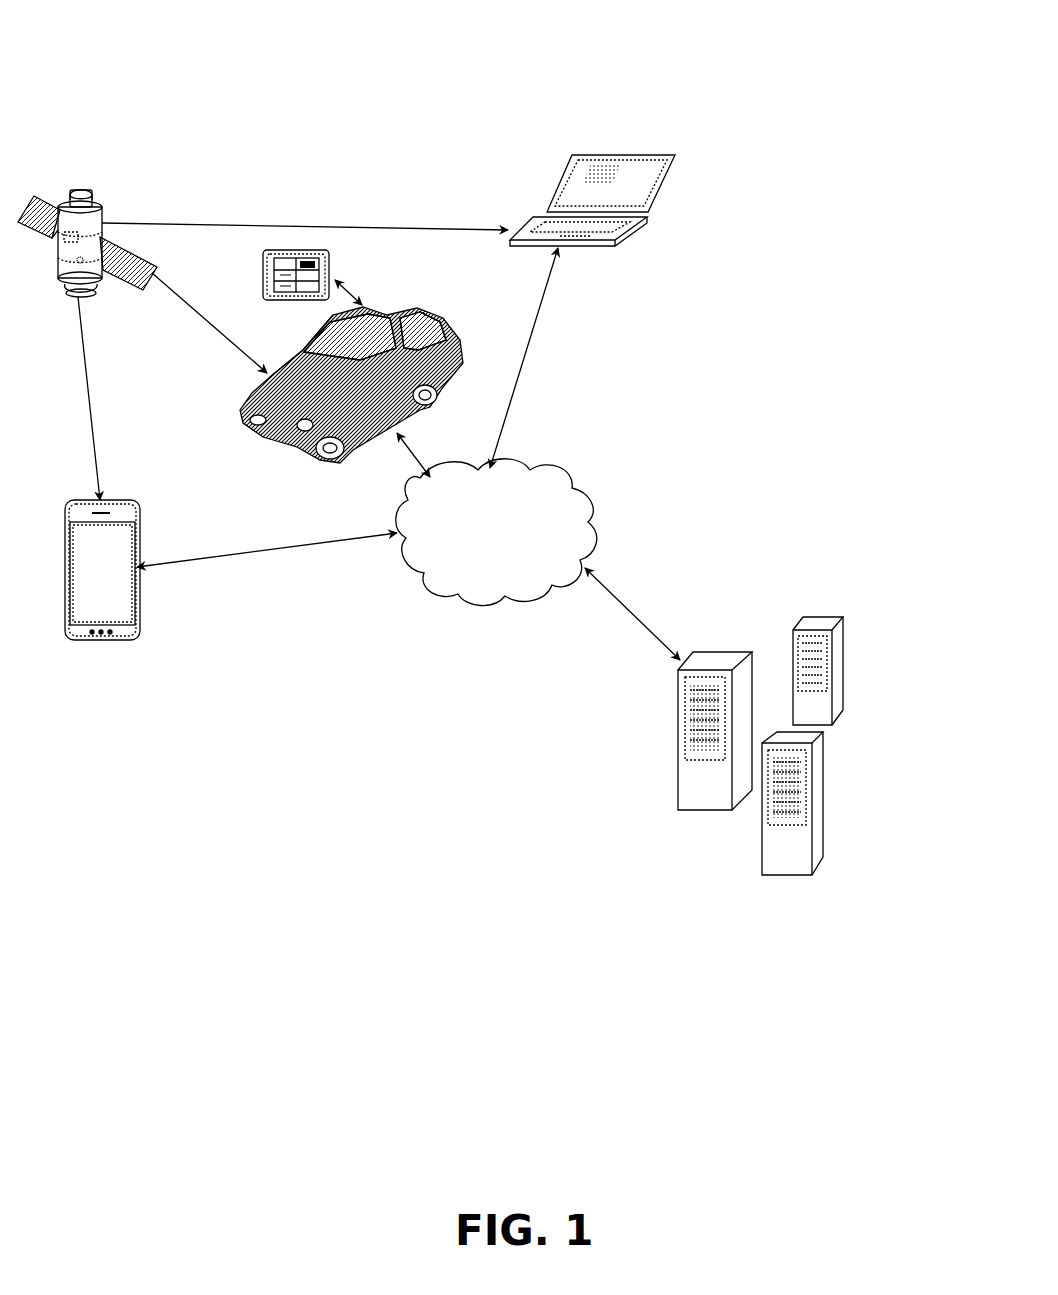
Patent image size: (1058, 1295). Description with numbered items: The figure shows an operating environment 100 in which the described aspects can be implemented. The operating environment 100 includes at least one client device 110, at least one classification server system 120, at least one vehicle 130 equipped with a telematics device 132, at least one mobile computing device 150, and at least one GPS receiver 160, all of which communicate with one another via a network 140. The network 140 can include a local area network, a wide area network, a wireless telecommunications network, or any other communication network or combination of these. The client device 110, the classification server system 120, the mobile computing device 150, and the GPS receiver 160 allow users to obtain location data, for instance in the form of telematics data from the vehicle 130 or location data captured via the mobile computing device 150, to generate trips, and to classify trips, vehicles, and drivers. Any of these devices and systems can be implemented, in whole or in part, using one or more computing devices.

The operating environment 100 is at (822, 84).
The client device 110 is at (657, 198).
The classification server system 120 is at (833, 656).
The vehicle 130 is at (452, 320).
The telematics device 132 is at (335, 266).
The network 140 is at (600, 538).
The mobile computing device 150 is at (137, 527).
The GPS receiver 160 is at (157, 267).